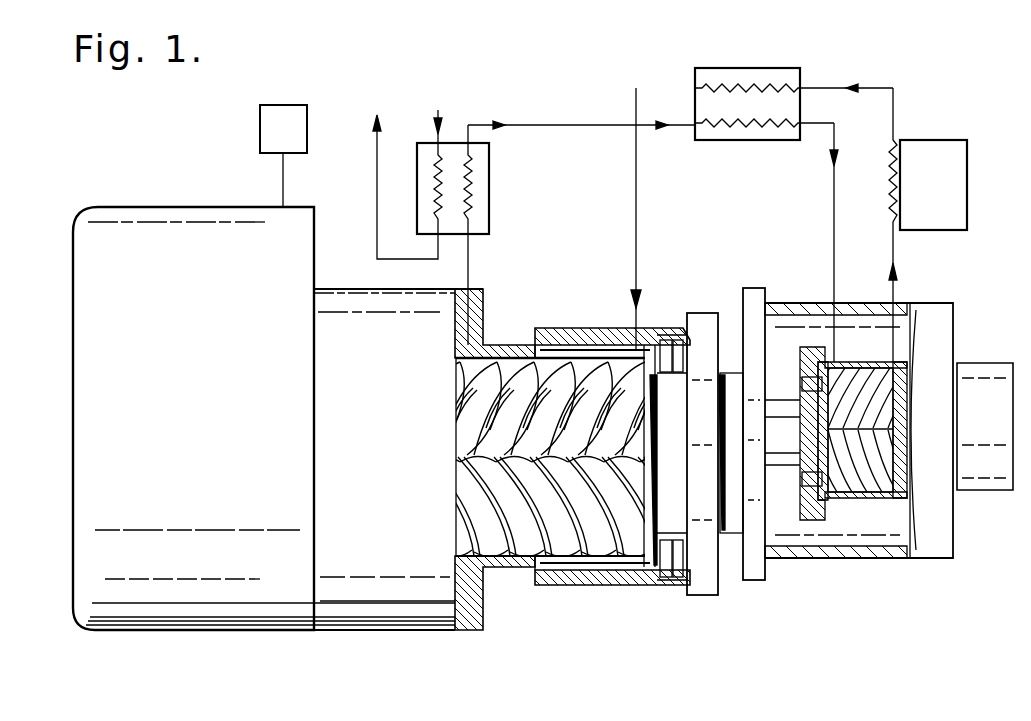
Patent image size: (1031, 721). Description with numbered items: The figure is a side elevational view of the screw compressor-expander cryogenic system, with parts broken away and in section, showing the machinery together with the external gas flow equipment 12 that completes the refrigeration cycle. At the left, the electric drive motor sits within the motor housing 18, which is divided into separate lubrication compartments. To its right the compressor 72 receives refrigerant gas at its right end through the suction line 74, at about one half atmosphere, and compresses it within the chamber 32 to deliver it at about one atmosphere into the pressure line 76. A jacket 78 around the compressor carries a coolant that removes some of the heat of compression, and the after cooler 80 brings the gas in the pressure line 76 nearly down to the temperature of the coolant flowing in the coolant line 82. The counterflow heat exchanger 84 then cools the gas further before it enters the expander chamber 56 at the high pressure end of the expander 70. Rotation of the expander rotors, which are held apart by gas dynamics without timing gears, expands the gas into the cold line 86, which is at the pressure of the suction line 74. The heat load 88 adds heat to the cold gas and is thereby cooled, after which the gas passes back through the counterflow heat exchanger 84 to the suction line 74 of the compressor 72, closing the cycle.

The external gas flow equipment 12 is at (455, 57).
The motor housing 18 is at (100, 212).
The chamber 32 is at (498, 545).
The expander chamber 56 is at (856, 483).
The expander 70 is at (901, 508).
The compressor 72 is at (592, 568).
The suction line 74 is at (640, 300).
The pressure line 76 is at (510, 126).
The jacket 78 is at (643, 583).
The after cooler 80 is at (490, 234).
The coolant line 82 is at (440, 133).
The counterflow heat exchanger 84 is at (800, 68).
The cold line 86 is at (897, 266).
The heat load 88 is at (967, 140).